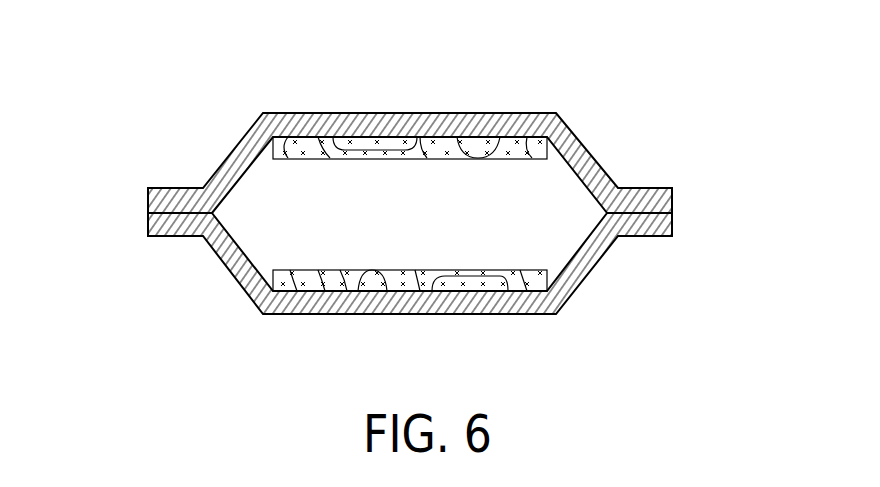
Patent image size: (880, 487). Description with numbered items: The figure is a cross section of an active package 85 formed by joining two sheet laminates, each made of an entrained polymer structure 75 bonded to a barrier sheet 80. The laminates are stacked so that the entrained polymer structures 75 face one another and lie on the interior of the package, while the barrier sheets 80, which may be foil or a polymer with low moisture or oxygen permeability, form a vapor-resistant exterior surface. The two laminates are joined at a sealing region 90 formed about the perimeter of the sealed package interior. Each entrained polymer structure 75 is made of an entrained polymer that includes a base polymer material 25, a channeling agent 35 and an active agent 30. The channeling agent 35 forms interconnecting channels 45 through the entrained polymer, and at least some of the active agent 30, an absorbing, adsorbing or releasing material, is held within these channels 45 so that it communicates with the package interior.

The base polymer material 25 is at (442, 148).
The active agent 30 is at (330, 150).
The channeling agent 35 is at (403, 148).
The interconnecting channels 45 is at (333, 150).
The entrained polymer structure 75 is at (363, 148).
The barrier sheet 80 is at (498, 118).
The active package 85 is at (410, 189).
The sealing region 90 is at (165, 213).